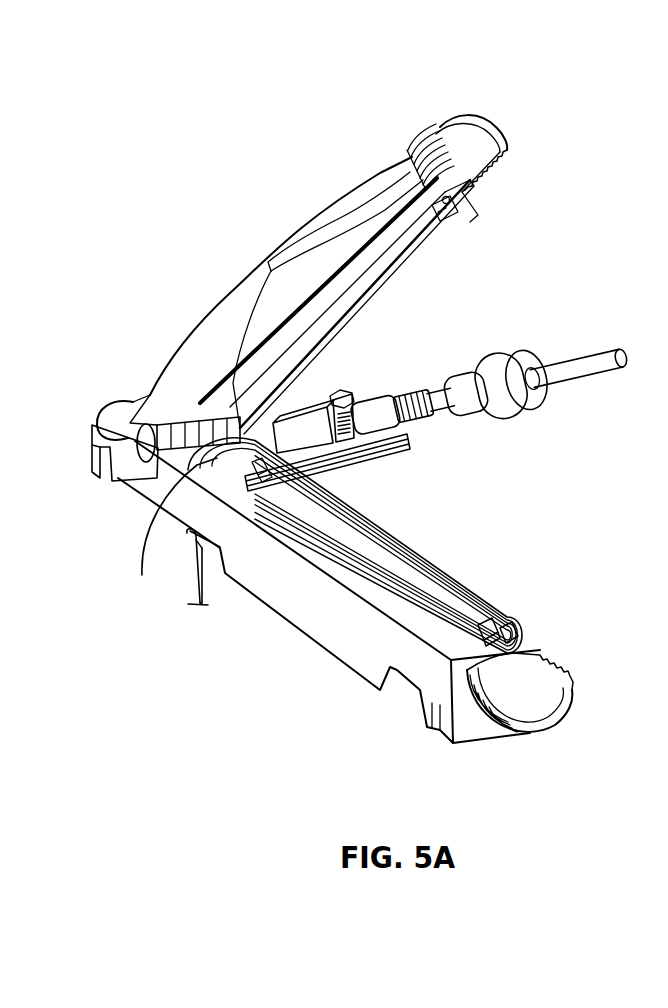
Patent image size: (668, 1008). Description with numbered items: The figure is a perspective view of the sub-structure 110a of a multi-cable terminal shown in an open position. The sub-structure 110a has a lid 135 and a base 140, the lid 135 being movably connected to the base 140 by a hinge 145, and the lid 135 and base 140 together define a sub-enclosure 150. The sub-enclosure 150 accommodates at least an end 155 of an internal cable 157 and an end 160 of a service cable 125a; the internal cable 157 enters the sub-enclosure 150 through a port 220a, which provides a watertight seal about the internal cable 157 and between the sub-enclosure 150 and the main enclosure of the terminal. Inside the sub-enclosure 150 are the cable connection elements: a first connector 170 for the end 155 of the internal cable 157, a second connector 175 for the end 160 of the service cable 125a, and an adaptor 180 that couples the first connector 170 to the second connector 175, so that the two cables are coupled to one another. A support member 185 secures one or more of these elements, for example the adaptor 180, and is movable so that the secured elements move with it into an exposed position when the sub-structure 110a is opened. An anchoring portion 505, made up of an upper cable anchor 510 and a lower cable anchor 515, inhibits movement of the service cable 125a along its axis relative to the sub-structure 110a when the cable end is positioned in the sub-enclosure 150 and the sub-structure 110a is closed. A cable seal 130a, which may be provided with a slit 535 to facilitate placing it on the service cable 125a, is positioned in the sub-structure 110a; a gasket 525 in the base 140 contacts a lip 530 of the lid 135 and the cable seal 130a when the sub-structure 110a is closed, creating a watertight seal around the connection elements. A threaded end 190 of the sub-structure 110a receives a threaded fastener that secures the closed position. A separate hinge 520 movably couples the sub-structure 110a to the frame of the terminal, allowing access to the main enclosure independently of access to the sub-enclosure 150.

The sub-structure 110a is at (163, 332).
The service cable 125a is at (585, 375).
The cable seal 130a is at (492, 370).
The lid 135 is at (321, 207).
The base 140 is at (525, 648).
The hinge 145 is at (127, 467).
The sub-enclosure 150 is at (418, 580).
The end of internal cable 155 is at (170, 494).
The internal cable 157 is at (208, 588).
The end of service cable 160 is at (433, 412).
The first connector 170 is at (317, 437).
The second connector 175 is at (397, 410).
The adaptor 180 is at (341, 404).
The support member 185 is at (370, 440).
The threaded end 190 is at (465, 121).
The port 220a is at (187, 532).
The anchoring portion 505 is at (480, 200).
The upper cable anchor 510 is at (430, 226).
The lower cable anchor 515 is at (480, 620).
The hinge 520 is at (134, 404).
The gasket 525 is at (517, 662).
The lip 530 is at (368, 231).
The slit 535 is at (531, 360).